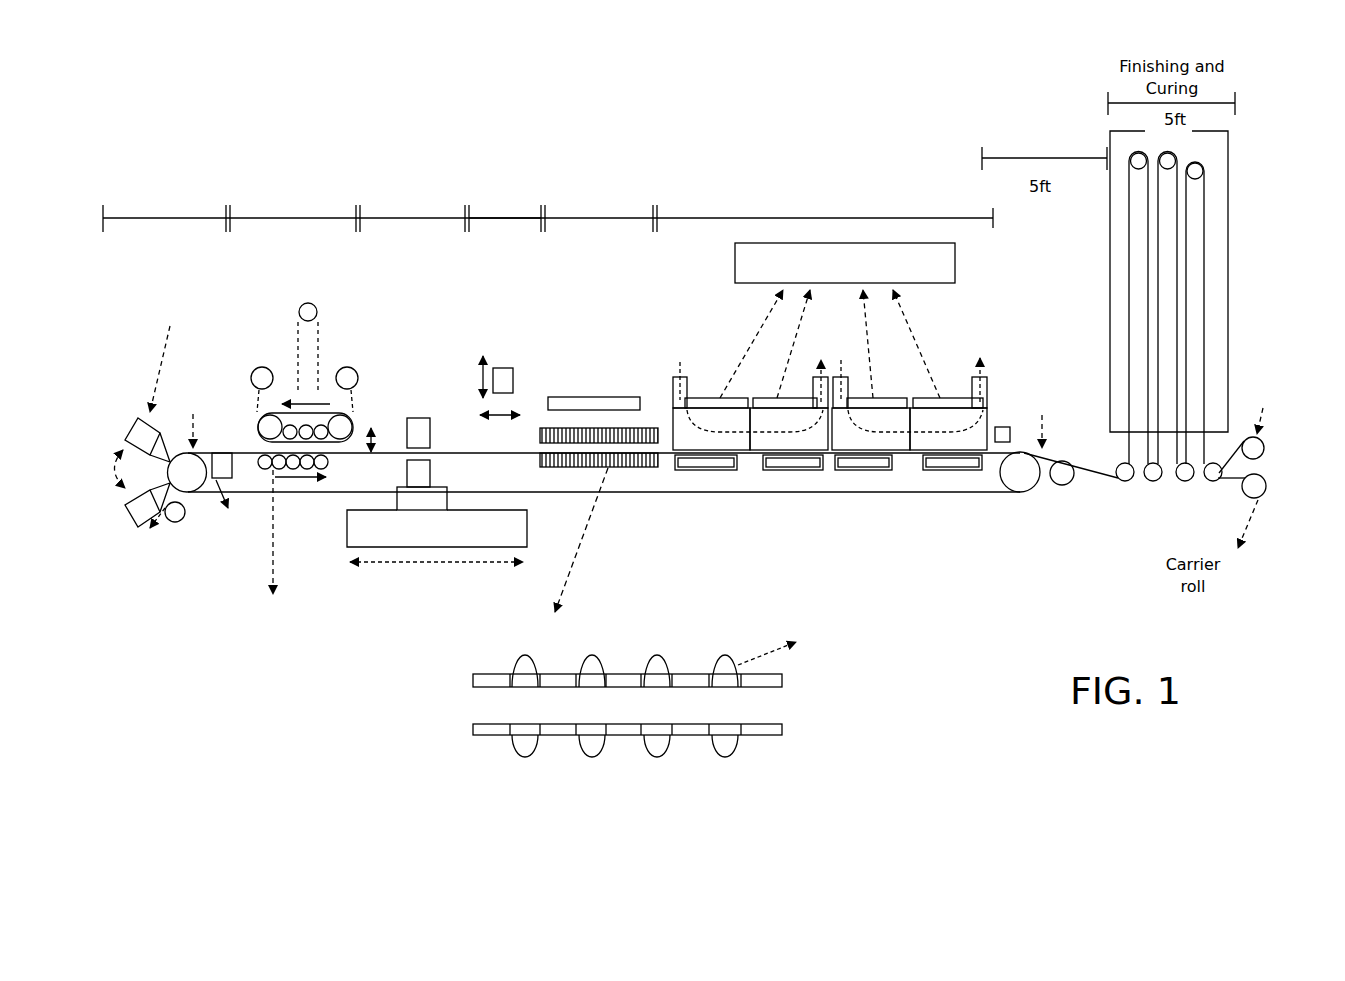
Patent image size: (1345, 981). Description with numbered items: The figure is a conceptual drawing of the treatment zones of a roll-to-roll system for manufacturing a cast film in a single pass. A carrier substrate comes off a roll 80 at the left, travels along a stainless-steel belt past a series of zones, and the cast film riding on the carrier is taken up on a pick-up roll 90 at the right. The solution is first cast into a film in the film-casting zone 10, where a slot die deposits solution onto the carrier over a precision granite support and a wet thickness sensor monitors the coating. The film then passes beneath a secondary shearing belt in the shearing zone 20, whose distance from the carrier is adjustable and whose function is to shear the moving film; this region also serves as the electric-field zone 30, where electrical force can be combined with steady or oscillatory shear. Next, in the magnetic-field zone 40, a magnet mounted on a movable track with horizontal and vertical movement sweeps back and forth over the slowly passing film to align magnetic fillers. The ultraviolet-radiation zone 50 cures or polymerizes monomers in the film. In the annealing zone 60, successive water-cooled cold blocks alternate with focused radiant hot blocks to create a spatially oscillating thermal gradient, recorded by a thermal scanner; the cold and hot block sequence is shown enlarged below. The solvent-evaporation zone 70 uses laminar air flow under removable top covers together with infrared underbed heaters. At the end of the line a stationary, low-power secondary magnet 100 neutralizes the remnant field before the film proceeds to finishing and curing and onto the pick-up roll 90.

The film-casting zone 10 is at (146, 140).
The shearing zone 20 is at (271, 149).
The electric-field zone 30 is at (302, 149).
The magnetic-field zone 40 is at (401, 154).
The ultraviolet-radiation zone 50 is at (492, 164).
The annealing zone 60 is at (587, 149).
The solvent-evaporation zone 70 is at (781, 154).
The roll 80 is at (182, 518).
The pick-up roll 90 is at (1256, 450).
The secondary magnet 100 is at (1002, 443).